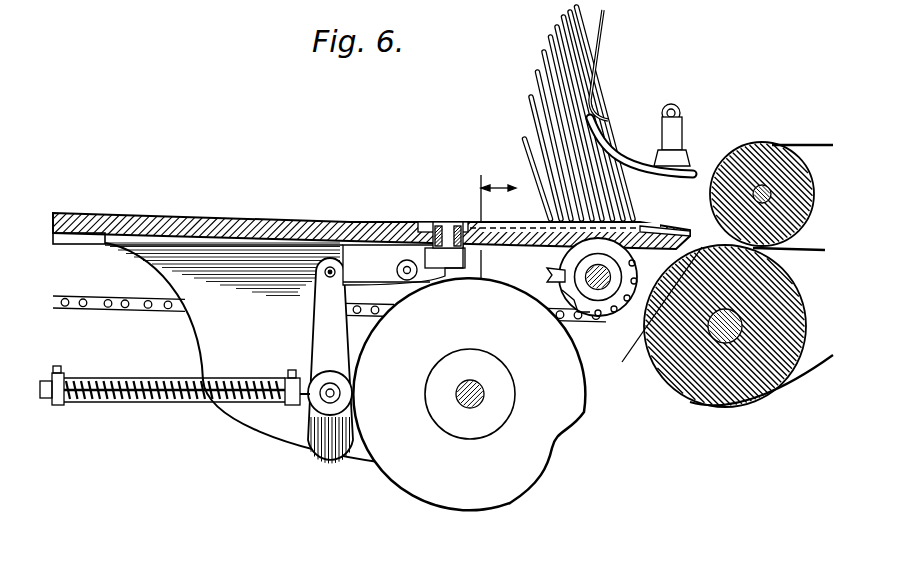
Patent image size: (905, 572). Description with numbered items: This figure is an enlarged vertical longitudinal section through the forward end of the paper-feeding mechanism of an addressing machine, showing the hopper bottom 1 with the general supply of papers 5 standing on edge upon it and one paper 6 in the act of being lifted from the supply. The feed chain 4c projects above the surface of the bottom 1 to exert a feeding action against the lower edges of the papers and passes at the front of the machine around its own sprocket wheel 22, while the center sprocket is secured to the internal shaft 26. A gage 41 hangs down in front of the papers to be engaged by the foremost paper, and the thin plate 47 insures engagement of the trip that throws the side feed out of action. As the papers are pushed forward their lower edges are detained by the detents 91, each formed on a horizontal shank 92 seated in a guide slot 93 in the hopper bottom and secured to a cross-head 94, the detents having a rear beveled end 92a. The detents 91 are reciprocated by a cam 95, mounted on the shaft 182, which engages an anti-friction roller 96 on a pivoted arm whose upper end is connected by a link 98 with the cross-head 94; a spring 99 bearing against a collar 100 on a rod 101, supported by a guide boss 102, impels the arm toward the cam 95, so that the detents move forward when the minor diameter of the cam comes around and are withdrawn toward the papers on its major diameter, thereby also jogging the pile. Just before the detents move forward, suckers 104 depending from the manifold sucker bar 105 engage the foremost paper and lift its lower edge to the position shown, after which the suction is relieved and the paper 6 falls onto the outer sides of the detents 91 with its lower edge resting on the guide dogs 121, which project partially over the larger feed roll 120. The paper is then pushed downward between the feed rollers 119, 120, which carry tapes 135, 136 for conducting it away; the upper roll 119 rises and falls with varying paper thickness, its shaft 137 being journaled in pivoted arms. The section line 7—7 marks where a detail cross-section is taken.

The bottom portion 1 is at (226, 224).
The feed chain 4c is at (607, 322).
The general supply of papers 5 is at (527, 120).
The paper being lifted 6 is at (612, 146).
The section line 7— 7 is at (493, 247).
The sprocket wheel 22 is at (548, 274).
The internal shaft 26 is at (594, 290).
The gage 41 is at (604, 42).
The thin projection or plate 47 is at (322, 331).
The detent 91 is at (630, 226).
The horizontal shank 92 is at (428, 222).
The rear beveled end 92a is at (403, 222).
The guide slot 93 is at (664, 238).
The cross-head 94 is at (458, 262).
The cam 95 is at (488, 508).
The anti-friction roller 96 is at (318, 408).
The link 98 is at (367, 258).
The spring 99 is at (184, 403).
The collar 100 is at (283, 402).
The rod 101 is at (165, 405).
The guide boss 102 is at (60, 406).
The sucker 104 is at (684, 153).
The manifold sucker pipe or bar 105 is at (681, 108).
The upper feed roller 119 is at (771, 148).
The lower feed roller 120 is at (738, 404).
The guide dog 121 is at (653, 312).
The tape 135 is at (830, 292).
The tape 136 is at (820, 398).
The shaft 137 is at (764, 202).
The shaft 182 is at (462, 402).